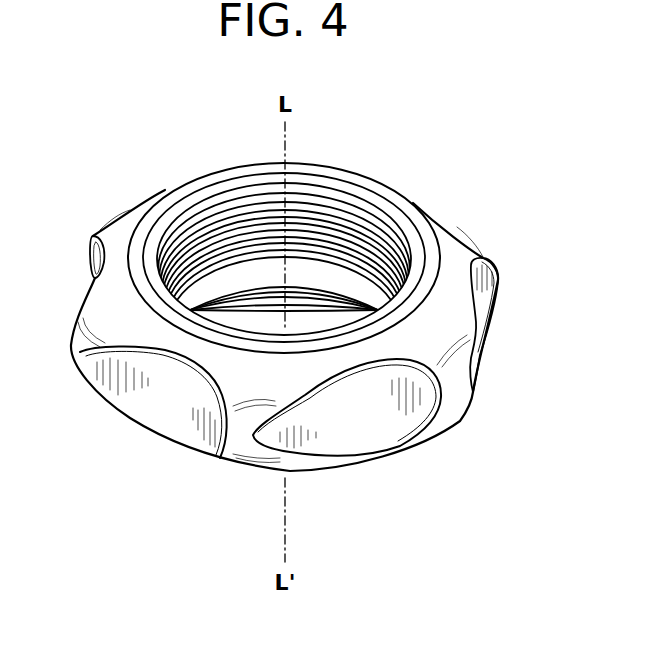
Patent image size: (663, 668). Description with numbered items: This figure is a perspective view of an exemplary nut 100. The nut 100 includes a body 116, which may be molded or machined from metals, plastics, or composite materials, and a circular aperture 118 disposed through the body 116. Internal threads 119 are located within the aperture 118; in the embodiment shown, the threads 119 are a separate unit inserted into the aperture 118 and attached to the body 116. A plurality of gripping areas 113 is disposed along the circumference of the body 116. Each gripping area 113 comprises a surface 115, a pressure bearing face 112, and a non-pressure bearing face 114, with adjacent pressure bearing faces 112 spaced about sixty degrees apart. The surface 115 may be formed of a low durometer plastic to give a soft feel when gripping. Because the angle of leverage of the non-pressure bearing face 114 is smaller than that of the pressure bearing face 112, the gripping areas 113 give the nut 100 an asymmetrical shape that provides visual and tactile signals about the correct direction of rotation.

The nut 100 is at (370, 138).
The pressure bearing face 112 is at (416, 420).
The gripping area 113 is at (483, 300).
The non-pressure bearing face 114 is at (293, 438).
The surface 115 is at (383, 405).
The body 116 is at (447, 228).
The circular aperture 118 is at (362, 218).
The internal threads 119 is at (224, 217).